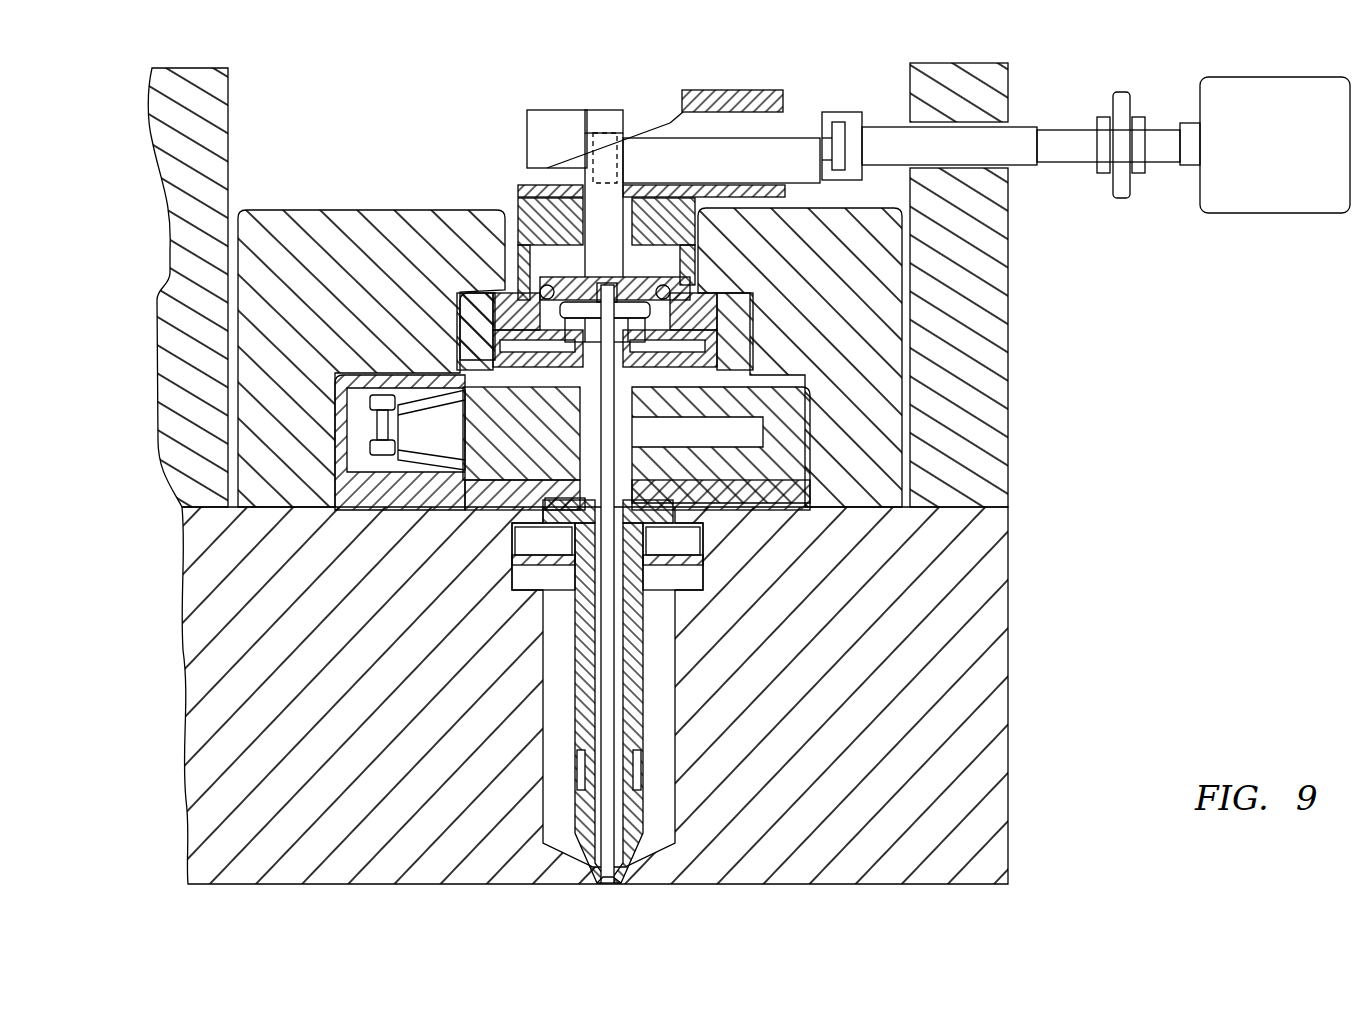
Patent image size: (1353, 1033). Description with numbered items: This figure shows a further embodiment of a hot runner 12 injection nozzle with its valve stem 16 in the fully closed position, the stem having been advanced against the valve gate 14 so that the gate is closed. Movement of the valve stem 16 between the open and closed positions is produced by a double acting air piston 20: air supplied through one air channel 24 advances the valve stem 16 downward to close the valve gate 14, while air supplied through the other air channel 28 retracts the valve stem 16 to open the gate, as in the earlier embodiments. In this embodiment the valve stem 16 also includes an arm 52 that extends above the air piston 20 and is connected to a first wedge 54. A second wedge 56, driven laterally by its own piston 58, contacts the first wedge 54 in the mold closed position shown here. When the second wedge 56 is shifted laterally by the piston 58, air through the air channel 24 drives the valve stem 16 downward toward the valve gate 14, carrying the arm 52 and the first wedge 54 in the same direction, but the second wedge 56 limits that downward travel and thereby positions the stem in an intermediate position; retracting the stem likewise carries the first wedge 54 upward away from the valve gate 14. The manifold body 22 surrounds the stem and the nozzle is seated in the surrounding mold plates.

The hot runner 12 is at (583, 672).
The valve gate 14 is at (600, 884).
The valve stem 16 is at (610, 643).
The double acting air piston 20 is at (650, 280).
The manifold 22 is at (602, 378).
The air channel 24 is at (459, 345).
The air channel 28 is at (710, 338).
The arm 52 is at (593, 232).
The first wedge 54 is at (538, 108).
The second wedge 56 is at (653, 140).
The piston 58 is at (1258, 78).